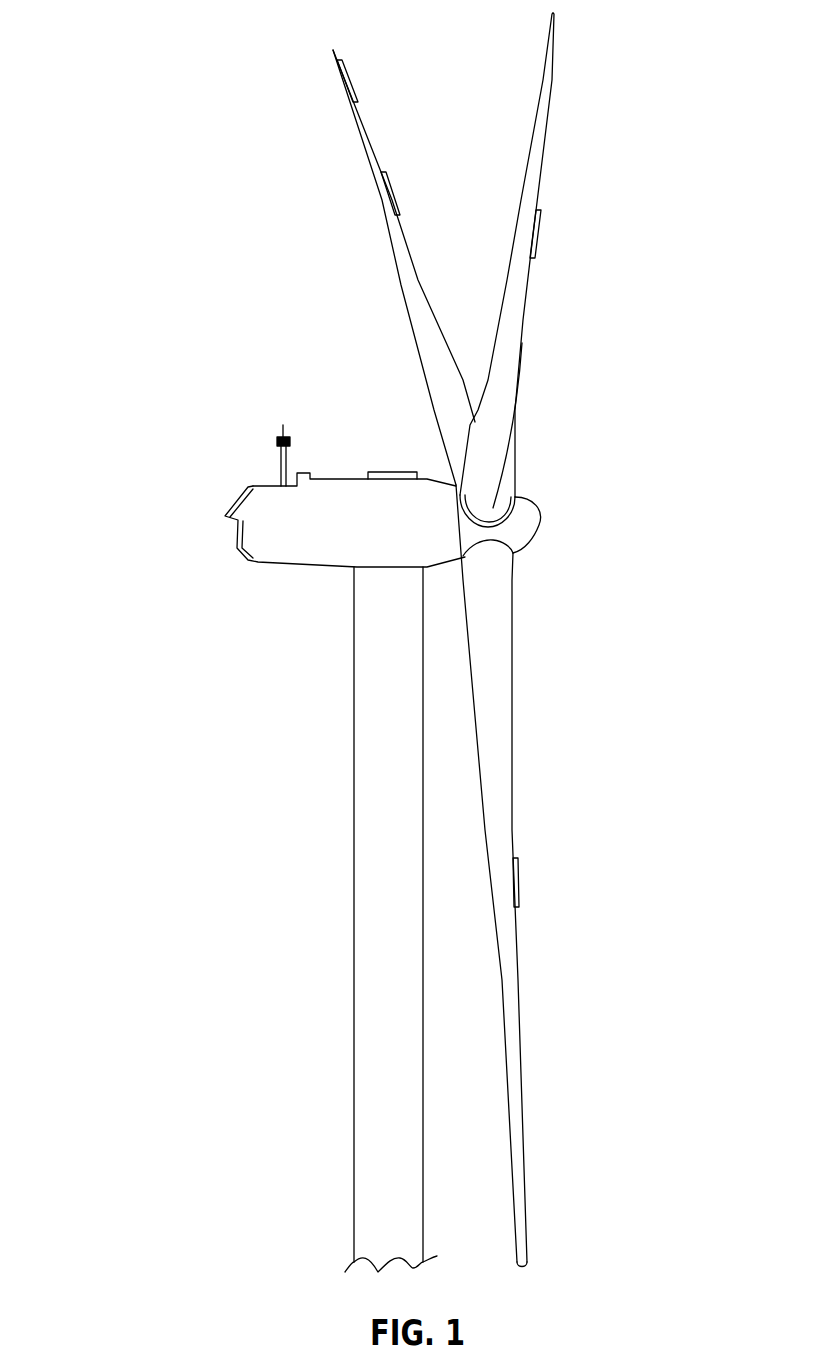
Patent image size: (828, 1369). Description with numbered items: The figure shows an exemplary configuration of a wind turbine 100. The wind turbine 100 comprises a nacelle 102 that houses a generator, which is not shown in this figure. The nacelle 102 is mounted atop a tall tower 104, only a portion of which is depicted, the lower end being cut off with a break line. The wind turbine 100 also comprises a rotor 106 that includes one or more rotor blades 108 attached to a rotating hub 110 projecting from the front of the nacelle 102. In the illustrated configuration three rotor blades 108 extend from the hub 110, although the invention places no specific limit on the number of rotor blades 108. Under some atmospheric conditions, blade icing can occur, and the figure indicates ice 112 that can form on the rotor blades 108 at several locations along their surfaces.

The wind turbine 100 is at (186, 275).
The nacelle 102 is at (300, 565).
The tower 104 is at (354, 862).
The rotor 106 is at (625, 304).
The rotor blade 108 is at (565, 106).
The rotating hub 110 is at (535, 533).
The ice 112 is at (352, 80).